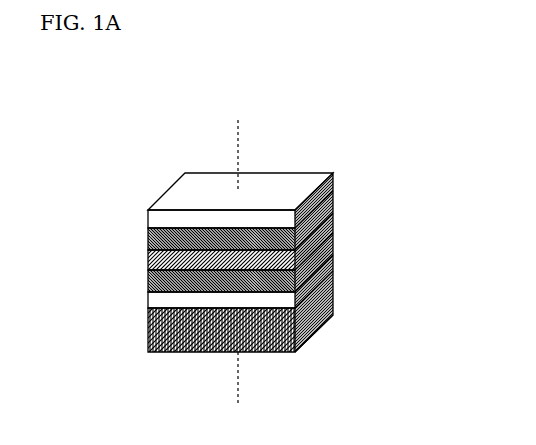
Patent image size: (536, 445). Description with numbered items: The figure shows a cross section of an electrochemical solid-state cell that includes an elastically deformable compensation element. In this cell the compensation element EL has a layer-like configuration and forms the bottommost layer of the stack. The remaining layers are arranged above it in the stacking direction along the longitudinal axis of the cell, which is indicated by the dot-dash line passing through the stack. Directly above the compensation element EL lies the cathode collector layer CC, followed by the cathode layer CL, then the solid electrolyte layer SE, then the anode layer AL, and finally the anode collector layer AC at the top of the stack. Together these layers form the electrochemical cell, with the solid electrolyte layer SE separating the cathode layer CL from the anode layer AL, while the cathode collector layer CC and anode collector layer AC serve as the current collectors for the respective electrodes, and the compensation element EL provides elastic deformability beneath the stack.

The anode layer AL is at (145, 242).
The cathode layer CL is at (145, 278).
The compensation element EL is at (145, 327).
The anode collector layer AC is at (336, 190).
The solid electrolyte layer SE is at (336, 230).
The cathode collector layer CC is at (336, 267).